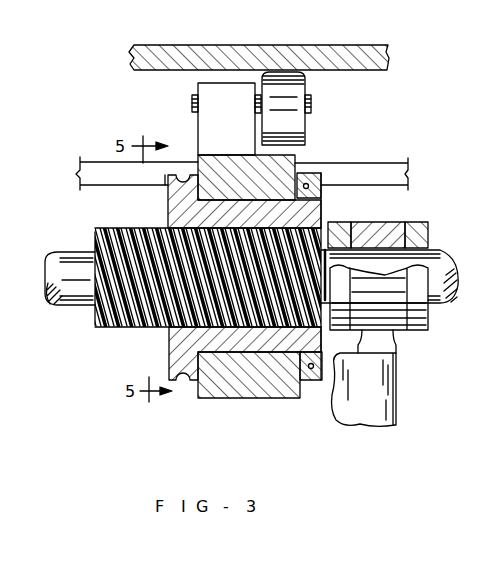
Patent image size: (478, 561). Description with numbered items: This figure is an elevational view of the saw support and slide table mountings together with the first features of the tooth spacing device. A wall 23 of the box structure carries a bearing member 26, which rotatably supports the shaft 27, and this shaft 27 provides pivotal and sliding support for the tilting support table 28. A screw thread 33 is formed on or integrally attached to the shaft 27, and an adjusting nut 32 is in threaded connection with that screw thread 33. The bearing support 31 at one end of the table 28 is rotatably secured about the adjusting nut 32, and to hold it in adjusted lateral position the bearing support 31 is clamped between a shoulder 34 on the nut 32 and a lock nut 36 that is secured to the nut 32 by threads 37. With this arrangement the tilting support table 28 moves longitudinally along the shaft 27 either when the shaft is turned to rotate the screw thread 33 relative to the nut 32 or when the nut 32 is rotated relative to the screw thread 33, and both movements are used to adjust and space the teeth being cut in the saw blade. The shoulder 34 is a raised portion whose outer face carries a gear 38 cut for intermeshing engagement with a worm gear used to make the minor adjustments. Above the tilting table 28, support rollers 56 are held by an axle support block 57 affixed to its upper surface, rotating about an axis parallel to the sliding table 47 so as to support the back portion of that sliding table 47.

The wall 23 is at (392, 392).
The bearing member 26 is at (397, 222).
The shaft 27 is at (76, 298).
The tilting support table 28 is at (90, 172).
The bearing support 31 is at (297, 158).
The adjusting nut 32 is at (323, 218).
The screw thread 33 is at (138, 232).
The shoulder 34 is at (180, 344).
The lock nut 36 is at (322, 174).
The threads 37 is at (322, 193).
The gear 38 is at (186, 381).
The sliding table 47 is at (274, 49).
The support roller 56 is at (294, 82).
The axle support block 57 is at (203, 122).